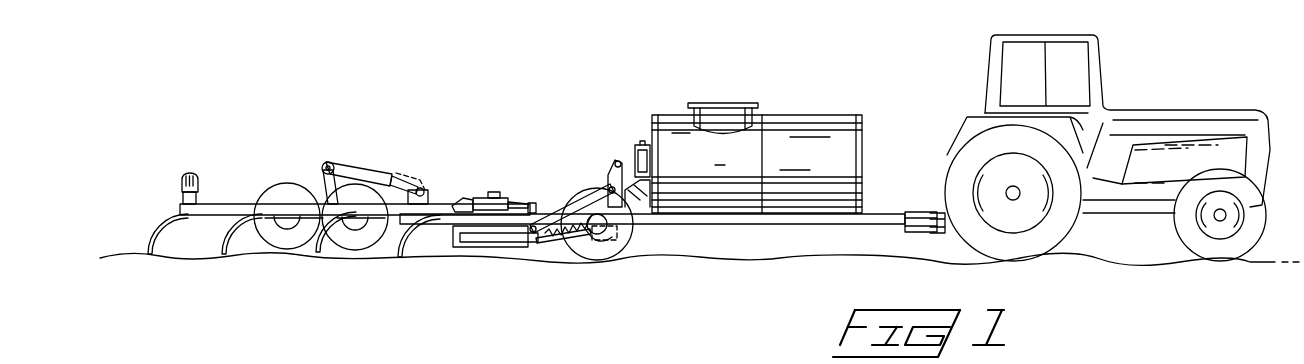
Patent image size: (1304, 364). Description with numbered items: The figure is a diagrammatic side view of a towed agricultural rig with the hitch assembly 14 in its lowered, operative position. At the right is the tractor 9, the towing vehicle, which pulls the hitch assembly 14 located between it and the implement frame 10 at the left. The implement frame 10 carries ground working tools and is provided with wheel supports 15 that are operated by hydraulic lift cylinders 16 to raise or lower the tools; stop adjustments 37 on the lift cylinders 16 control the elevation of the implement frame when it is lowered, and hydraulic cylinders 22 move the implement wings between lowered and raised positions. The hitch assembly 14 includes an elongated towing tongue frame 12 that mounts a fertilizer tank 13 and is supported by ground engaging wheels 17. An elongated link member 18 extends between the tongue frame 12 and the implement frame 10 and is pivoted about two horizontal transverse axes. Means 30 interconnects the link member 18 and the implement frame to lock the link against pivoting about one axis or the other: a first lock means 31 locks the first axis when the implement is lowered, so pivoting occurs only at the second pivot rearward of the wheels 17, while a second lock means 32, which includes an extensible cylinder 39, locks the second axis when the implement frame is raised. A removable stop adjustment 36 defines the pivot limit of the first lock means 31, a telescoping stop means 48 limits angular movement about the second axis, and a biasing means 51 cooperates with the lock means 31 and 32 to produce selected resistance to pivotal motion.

The tractor 9 is at (1167, 109).
The implement frame 10 is at (236, 203).
The towing tongue frame 12 is at (892, 213).
The fertilizer tank 13 is at (835, 125).
The hitch assembly 14 is at (566, 200).
The wheel supports 15 is at (287, 183).
The hydraulic lift cylinders 16 is at (350, 165).
The ground engaging wheels 17 is at (625, 258).
The link member 18 is at (588, 192).
The hydraulic cylinders 22 is at (181, 183).
The means for interconnecting 30 is at (509, 187).
The first lock means 31 is at (551, 255).
The second lock means 32 is at (468, 197).
The stop adjustment 36 is at (618, 262).
The stop adjustments 37 is at (410, 177).
The extensible cylinder 39 is at (494, 190).
The telescoping stop means 48 is at (477, 256).
The biasing means 51 is at (599, 235).